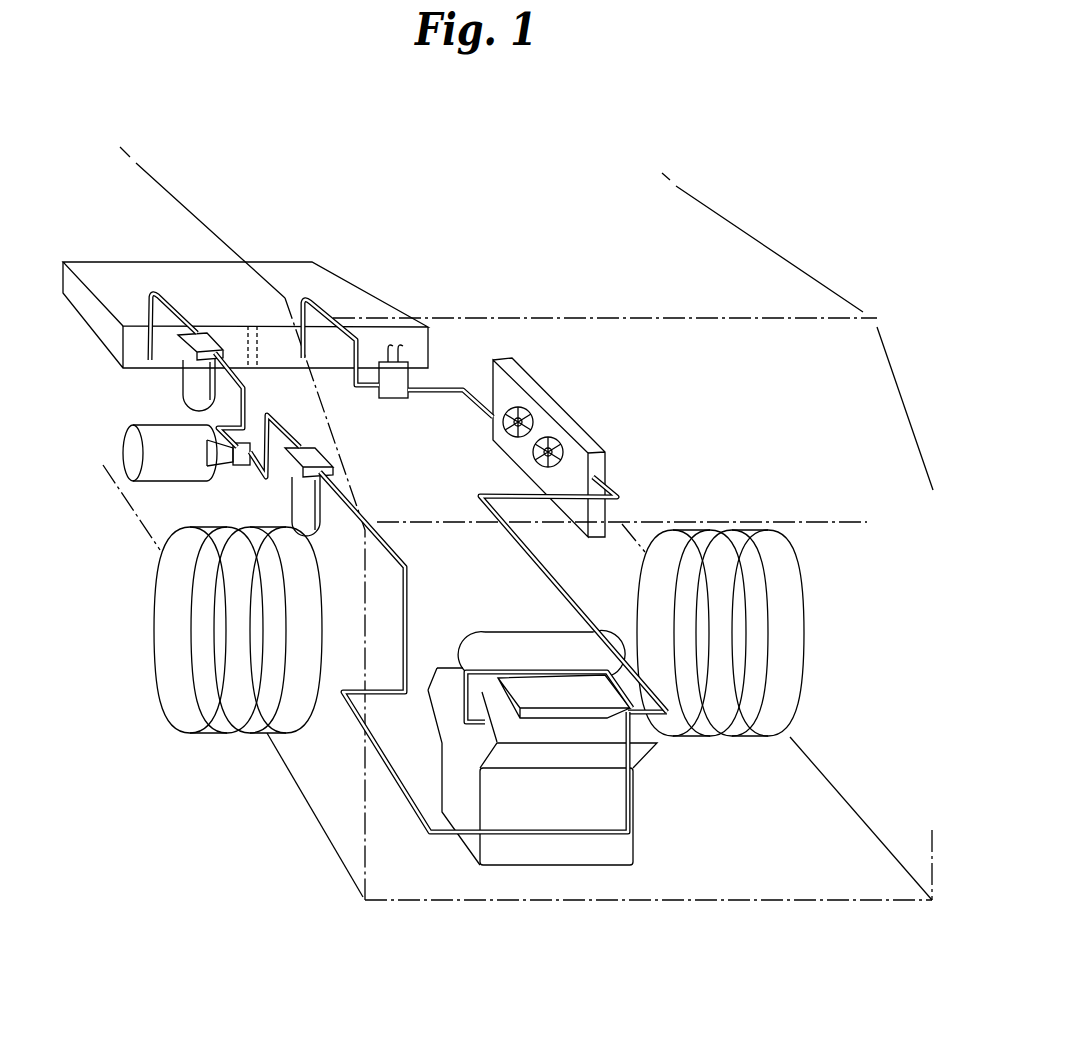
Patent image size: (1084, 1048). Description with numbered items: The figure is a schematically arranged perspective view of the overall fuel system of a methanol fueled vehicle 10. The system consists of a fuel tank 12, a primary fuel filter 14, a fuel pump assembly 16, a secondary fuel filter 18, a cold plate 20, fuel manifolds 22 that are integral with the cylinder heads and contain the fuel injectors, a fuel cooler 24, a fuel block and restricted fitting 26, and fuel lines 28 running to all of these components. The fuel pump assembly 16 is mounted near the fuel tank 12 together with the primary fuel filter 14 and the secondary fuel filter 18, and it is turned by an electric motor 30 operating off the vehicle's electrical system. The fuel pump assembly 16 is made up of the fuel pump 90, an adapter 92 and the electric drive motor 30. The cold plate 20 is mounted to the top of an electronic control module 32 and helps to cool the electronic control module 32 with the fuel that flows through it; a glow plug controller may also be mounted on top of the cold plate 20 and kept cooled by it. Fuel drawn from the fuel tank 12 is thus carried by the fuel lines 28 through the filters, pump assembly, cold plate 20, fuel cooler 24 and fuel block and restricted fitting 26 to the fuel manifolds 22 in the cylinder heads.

The vehicle 10 is at (883, 333).
The fuel tank 12 is at (357, 296).
The primary fuel filter 14 is at (195, 379).
The fuel pump assembly 16 is at (150, 415).
The secondary fuel filter 18 is at (332, 490).
The cold plate 20 is at (648, 714).
The fuel manifolds 22 is at (450, 668).
The fuel cooler 24 is at (580, 424).
The fuel block and restricted fitting 26 is at (408, 378).
The fuel lines 28 is at (173, 307).
The electric motor 30 is at (157, 470).
The electronic control module 32 is at (537, 718).
The fuel pump 90 is at (242, 467).
The adapter 92 is at (220, 462).